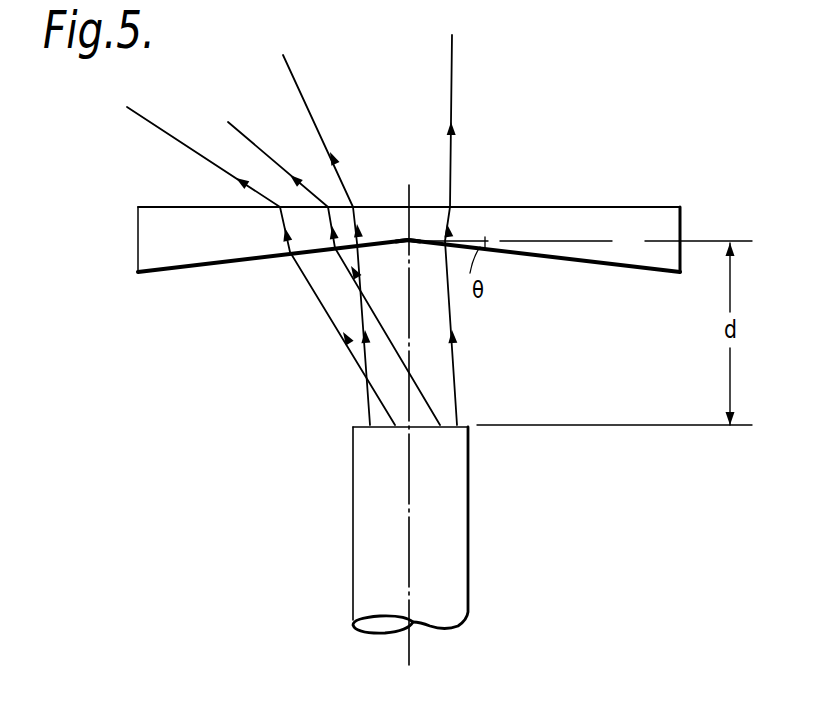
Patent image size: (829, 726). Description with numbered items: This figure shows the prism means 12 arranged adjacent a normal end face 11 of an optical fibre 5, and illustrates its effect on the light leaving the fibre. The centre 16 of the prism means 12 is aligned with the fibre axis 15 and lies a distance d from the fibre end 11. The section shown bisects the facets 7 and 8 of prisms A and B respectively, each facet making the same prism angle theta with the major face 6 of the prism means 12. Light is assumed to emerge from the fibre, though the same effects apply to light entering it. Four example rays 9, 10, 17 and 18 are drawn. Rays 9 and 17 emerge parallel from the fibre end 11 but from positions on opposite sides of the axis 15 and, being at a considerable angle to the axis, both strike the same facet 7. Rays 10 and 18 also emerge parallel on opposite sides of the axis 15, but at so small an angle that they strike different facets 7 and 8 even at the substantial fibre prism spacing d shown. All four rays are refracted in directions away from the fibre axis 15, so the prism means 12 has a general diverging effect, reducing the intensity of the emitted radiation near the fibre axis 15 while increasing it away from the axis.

The optical fibre 5 is at (382, 425).
The major face 6 is at (160, 207).
The facet 7 is at (233, 263).
The facet 8 is at (592, 263).
The ray 9 is at (253, 142).
The ray 10 is at (291, 73).
The end face 11 is at (362, 418).
The prism means 12 is at (409, 211).
The fibre axis 15 is at (407, 502).
The centre 16 is at (413, 247).
The ray 17 is at (138, 115).
The ray 18 is at (452, 88).